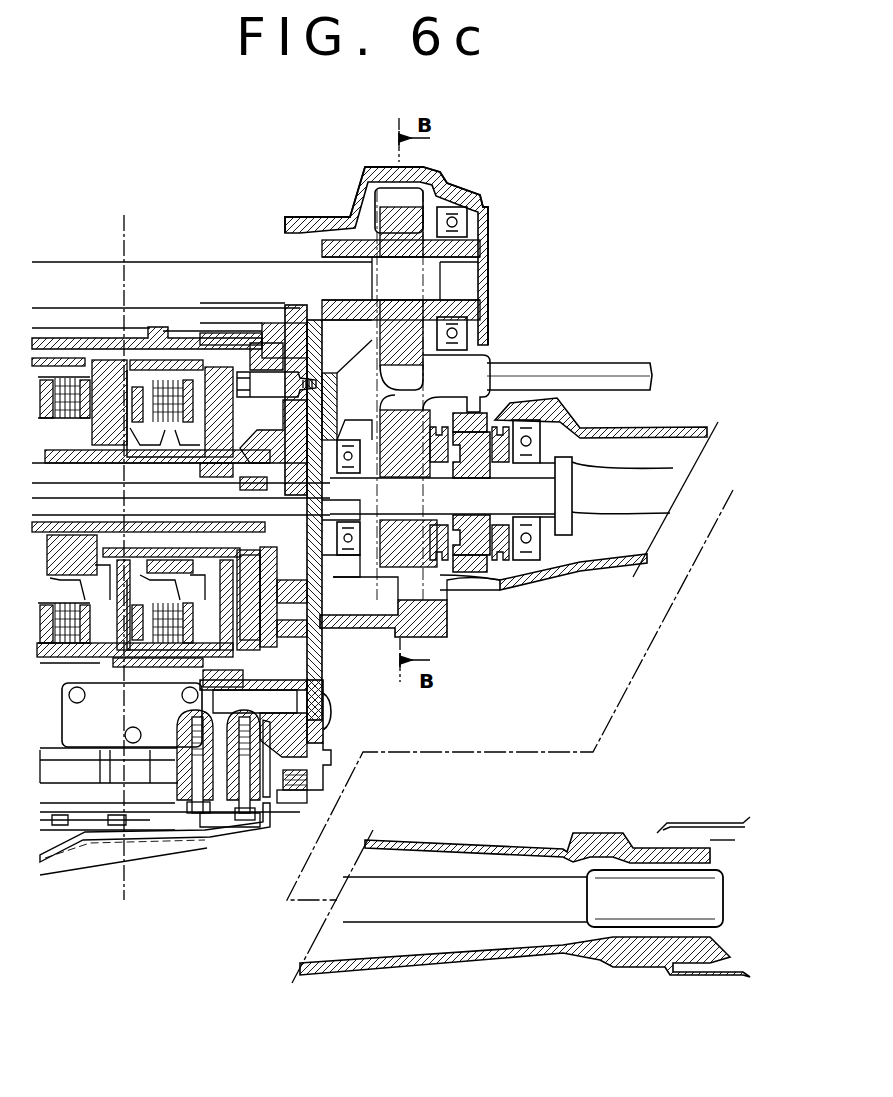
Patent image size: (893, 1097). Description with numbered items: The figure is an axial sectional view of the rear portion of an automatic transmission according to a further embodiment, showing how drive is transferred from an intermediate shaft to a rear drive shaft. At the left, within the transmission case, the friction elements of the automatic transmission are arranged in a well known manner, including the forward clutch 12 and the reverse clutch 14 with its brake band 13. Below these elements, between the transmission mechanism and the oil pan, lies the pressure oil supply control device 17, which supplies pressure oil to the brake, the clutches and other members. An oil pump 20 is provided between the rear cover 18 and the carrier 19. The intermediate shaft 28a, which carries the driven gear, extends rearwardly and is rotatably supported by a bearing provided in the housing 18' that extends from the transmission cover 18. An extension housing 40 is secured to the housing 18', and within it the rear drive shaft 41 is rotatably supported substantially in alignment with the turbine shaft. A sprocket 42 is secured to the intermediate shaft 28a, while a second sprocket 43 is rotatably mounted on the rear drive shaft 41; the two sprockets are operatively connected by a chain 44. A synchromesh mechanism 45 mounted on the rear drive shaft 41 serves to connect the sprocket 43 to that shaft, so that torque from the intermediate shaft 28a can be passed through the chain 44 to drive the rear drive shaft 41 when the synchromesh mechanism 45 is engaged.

The forward clutch 12 is at (60, 377).
The brake band 13 is at (163, 340).
The reverse clutch 14 is at (187, 357).
The pressure oil supply control device 17 is at (77, 800).
The rear cover 18 is at (271, 750).
The housing 18' is at (386, 249).
The carrier 19 is at (318, 326).
The oil pump 20 is at (307, 642).
The intermediate shaft 28a is at (110, 270).
The extension housing 40 is at (680, 428).
The rear drive shaft 41 is at (620, 490).
The sprocket 42 is at (392, 220).
The sprocket 43 is at (410, 578).
The chain 44 is at (423, 202).
The synchromesh mechanism 45 is at (480, 592).